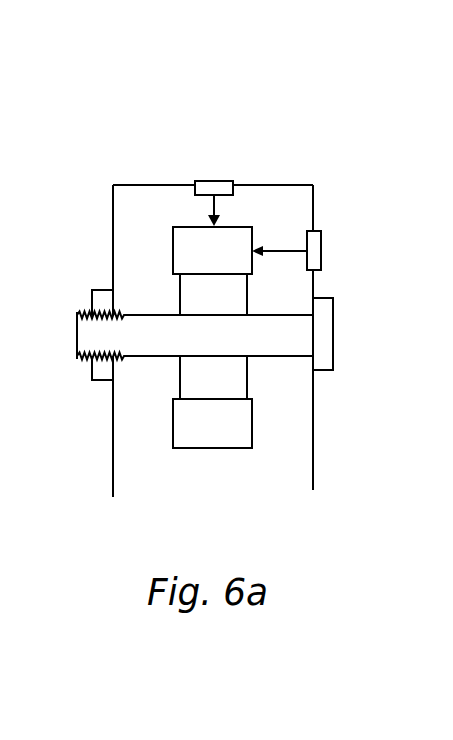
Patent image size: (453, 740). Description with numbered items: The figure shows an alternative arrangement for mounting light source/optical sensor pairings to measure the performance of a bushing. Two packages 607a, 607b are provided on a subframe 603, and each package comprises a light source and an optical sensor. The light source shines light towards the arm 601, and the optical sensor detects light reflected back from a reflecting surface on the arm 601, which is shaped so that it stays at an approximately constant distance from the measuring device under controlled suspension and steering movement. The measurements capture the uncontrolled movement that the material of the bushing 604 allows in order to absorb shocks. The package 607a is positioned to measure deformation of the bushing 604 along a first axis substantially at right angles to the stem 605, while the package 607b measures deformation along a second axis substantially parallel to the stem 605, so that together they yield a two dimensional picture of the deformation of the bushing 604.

The arm 601 is at (190, 250).
The subframe 603 is at (138, 184).
The bushing 604 is at (232, 293).
The stem 605 is at (310, 335).
The package 607a is at (217, 181).
The package 607b is at (321, 242).